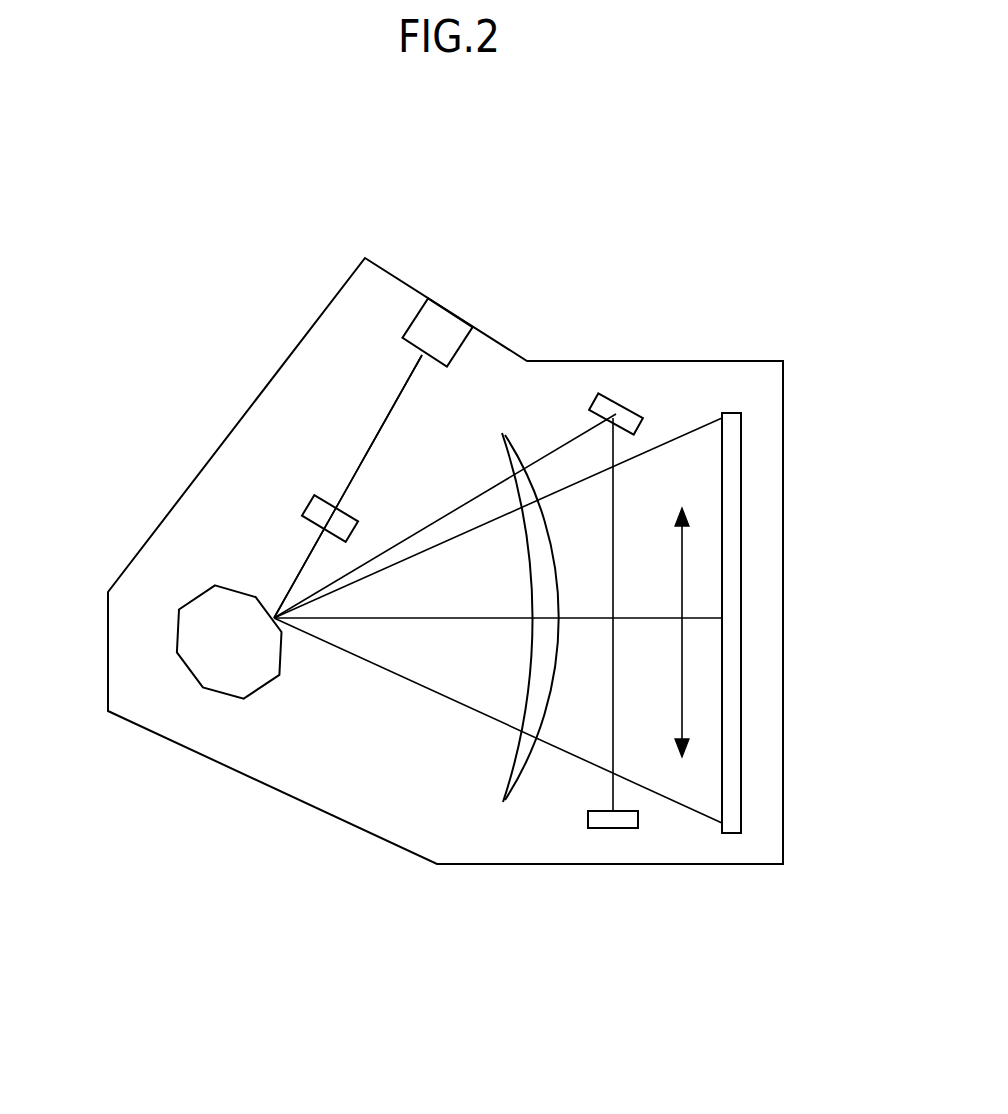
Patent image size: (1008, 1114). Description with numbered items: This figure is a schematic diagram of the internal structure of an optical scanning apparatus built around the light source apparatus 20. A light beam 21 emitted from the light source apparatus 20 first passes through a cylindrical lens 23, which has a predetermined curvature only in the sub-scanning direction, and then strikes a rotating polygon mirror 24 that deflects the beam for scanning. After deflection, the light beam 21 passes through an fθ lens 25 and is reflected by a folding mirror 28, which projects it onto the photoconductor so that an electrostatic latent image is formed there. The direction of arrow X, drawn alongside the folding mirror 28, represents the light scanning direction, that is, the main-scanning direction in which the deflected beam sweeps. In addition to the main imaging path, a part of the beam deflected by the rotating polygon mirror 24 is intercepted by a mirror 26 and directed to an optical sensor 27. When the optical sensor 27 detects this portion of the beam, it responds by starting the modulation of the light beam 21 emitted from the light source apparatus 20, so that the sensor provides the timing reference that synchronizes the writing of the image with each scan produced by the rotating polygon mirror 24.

The light source apparatus 20 is at (443, 323).
The light beam 21 is at (420, 365).
The cylindrical lens 23 is at (305, 512).
The rotating polygon mirror 24 is at (205, 662).
The fθ lens 25 is at (513, 758).
The mirror 26 is at (633, 418).
The optical sensor 27 is at (617, 822).
The folding mirror 28 is at (735, 437).
The arrow X is at (682, 593).